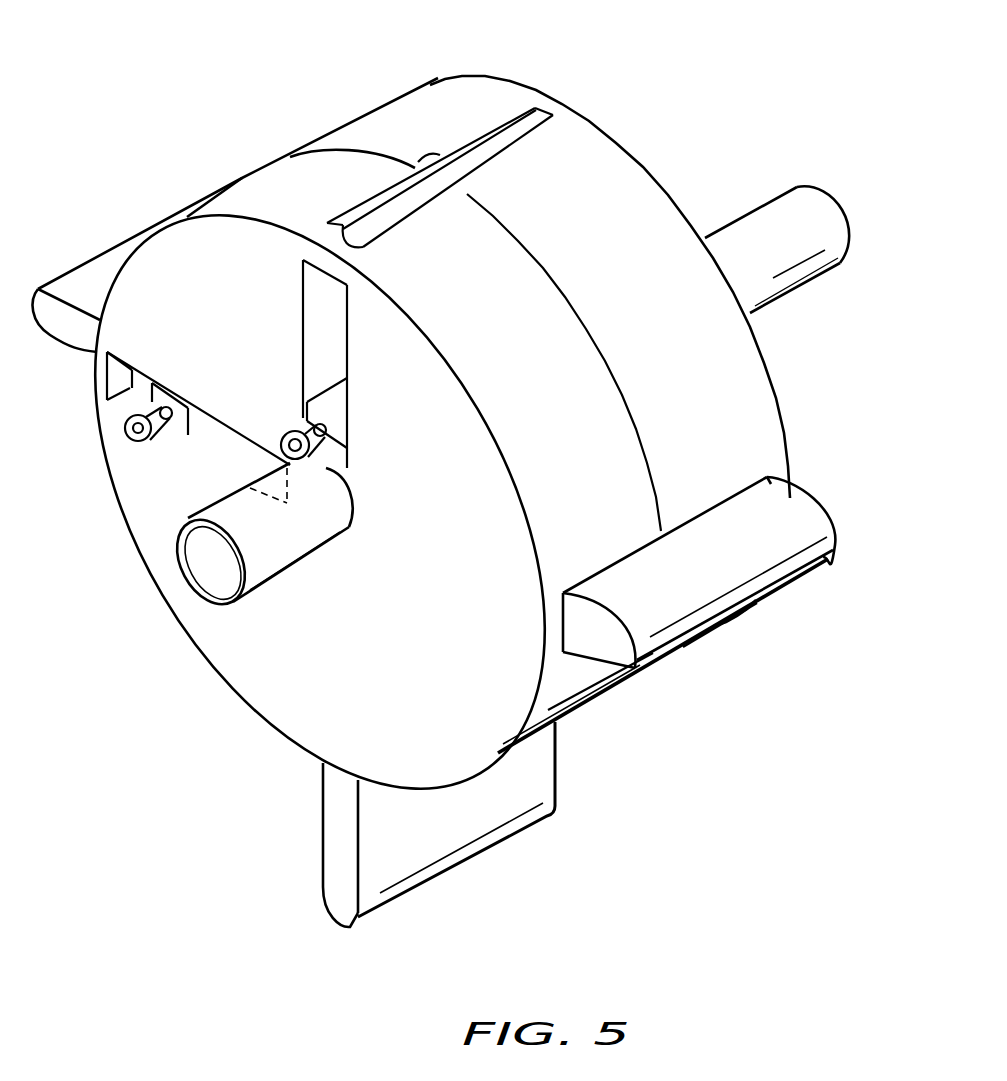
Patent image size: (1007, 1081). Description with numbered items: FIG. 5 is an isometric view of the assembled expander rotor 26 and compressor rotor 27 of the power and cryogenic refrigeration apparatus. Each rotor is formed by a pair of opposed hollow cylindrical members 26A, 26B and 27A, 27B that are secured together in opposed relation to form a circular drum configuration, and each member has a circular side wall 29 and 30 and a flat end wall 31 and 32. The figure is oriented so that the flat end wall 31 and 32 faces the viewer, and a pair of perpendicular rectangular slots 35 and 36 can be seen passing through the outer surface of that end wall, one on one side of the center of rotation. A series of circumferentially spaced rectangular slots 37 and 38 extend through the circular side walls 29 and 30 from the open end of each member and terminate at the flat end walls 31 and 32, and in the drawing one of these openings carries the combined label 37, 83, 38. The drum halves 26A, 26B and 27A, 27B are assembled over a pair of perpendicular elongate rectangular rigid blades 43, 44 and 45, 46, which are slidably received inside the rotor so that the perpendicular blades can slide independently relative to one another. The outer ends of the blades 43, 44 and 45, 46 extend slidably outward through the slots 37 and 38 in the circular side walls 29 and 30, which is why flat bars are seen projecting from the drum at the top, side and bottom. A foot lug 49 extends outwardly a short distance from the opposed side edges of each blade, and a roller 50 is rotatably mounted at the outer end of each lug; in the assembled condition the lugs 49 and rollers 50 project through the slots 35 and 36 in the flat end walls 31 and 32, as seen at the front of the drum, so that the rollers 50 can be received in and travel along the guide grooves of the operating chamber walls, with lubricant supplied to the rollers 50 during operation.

The expander rotor 26 is at (396, 445).
The compressor rotor 27 is at (706, 180).
The hollow cylindrical member 26A is at (320, 472).
The hollow cylindrical member 27A is at (250, 200).
The hollow cylindrical member 26B is at (610, 325).
The hollow cylindrical member 27B is at (497, 113).
The circular side wall 29 is at (663, 659).
The circular side wall 30 is at (683, 647).
The end wall 31 is at (490, 439).
The end wall 32 is at (700, 222).
The rectangular slot 35 is at (227, 381).
The rectangular slot 36 is at (320, 348).
The rectangular slot 37 is at (426, 177).
The rectangular slot 38 is at (404, 172).
The slot 83 is at (687, 530).
The rigid blade 43 is at (439, 830).
The rigid blade 44 is at (420, 857).
The rigid blade 45 is at (744, 563).
The rigid blade 46 is at (787, 520).
The foot lug 49 is at (333, 400).
The roller 50 is at (313, 437).